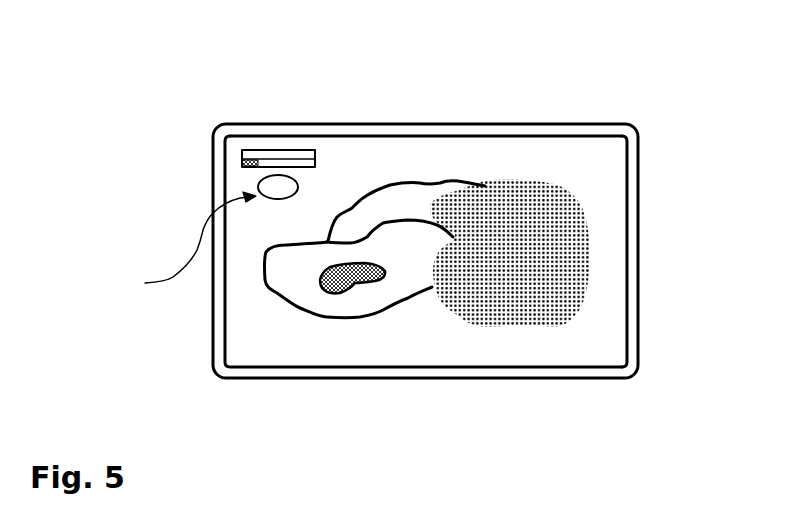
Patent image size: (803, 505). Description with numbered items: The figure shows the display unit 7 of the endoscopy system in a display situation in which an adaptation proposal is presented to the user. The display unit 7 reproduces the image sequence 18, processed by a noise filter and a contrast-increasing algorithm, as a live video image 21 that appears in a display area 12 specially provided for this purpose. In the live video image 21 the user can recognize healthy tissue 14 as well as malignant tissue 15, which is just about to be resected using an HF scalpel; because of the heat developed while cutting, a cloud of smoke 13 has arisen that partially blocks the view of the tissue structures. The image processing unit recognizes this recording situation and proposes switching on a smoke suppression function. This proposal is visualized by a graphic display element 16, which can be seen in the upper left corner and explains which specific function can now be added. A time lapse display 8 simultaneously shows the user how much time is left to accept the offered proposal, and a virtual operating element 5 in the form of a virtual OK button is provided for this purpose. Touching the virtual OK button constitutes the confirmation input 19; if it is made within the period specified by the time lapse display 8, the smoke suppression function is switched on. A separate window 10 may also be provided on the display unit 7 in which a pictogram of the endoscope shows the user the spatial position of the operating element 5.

The virtual operating element 5 is at (257, 187).
The display unit 7 is at (640, 305).
The time lapse display 8 is at (298, 165).
The separate window 10 is at (597, 348).
The display area 12 is at (587, 165).
The cloud of smoke 13 is at (548, 218).
The healthy tissue 14 is at (415, 202).
The malignant tissue 15 is at (347, 277).
The display element 16 is at (253, 160).
The image sequence 18 is at (492, 160).
The confirmation input 19 is at (180, 244).
The live video image 21 is at (550, 153).